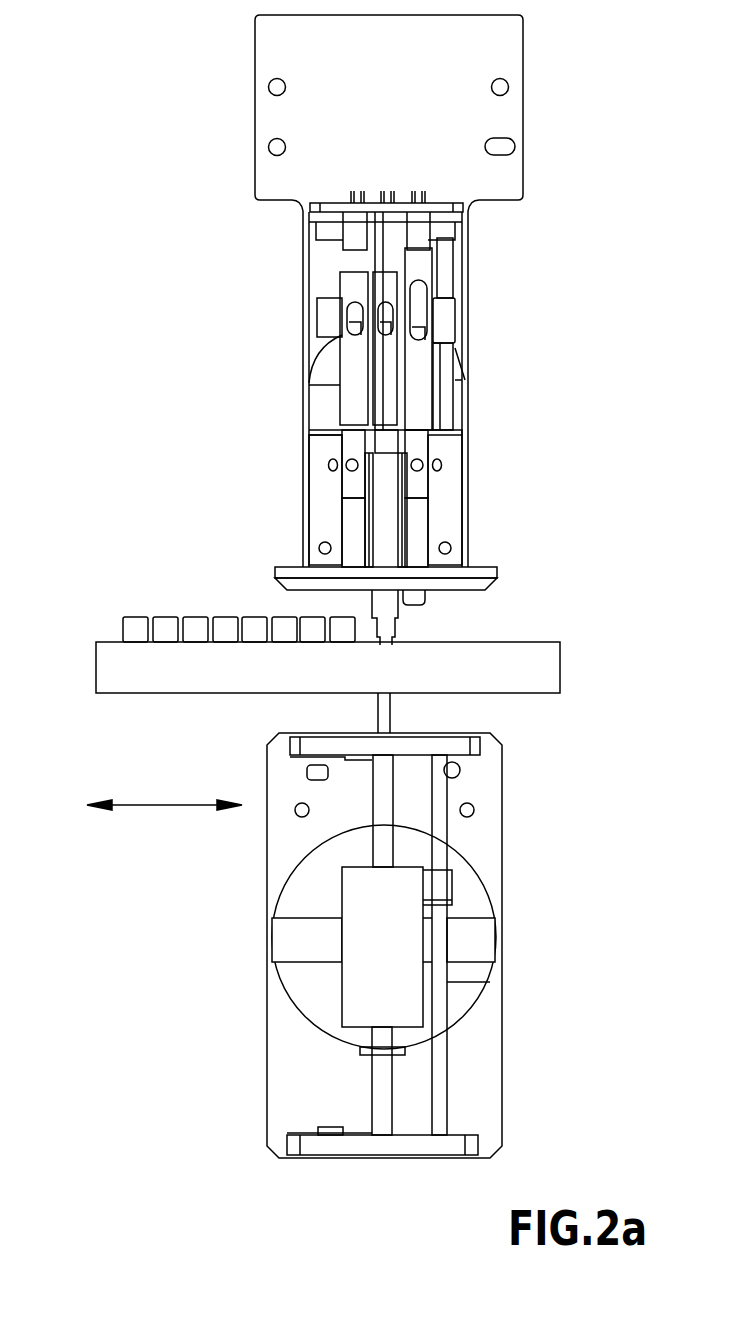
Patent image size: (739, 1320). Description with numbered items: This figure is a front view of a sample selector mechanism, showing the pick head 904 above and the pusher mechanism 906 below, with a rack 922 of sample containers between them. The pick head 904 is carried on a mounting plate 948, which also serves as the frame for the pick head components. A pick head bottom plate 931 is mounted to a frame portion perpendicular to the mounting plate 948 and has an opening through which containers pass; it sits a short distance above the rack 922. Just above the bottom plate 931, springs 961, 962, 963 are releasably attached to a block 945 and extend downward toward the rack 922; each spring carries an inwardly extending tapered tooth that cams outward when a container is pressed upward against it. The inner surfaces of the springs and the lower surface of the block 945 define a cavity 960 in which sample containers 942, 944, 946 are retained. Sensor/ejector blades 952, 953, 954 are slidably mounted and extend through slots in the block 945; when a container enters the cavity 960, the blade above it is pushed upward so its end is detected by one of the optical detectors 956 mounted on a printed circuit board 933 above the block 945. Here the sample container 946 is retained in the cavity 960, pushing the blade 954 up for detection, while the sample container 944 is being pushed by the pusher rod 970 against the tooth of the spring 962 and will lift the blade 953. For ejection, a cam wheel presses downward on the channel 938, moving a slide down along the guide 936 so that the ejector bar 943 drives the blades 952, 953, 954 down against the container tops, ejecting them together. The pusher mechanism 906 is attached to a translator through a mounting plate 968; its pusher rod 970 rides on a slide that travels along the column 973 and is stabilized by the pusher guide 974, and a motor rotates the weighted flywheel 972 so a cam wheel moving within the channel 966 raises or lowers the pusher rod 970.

The pick head 904 is at (190, 43).
The pusher mechanism 906 is at (183, 1037).
The rack 922 is at (212, 690).
The pick head bottom plate 931 is at (448, 590).
The printed circuit board 933 is at (327, 203).
The guide 936 is at (450, 268).
The channel 938 is at (463, 402).
The sample container 942 is at (278, 632).
The ejector bar 943 is at (325, 318).
The sample container 944 is at (385, 608).
The block 945 is at (455, 448).
The sample container 946 is at (427, 598).
The mounting plate 948 is at (515, 45).
The sensor/ejector blade 952 is at (347, 375).
The sensor/ejector blade 953 is at (378, 410).
The sensor/ejector blade 954 is at (423, 363).
The optical detector 956 is at (415, 222).
The cavity 960 is at (405, 530).
The spring 961 is at (350, 493).
The spring 962 is at (380, 535).
The spring 963 is at (420, 492).
The channel 966 is at (290, 948).
The mounting plate 968 is at (488, 783).
The pusher rod 970 is at (378, 715).
The flywheel 972 is at (307, 895).
The column 973 is at (385, 1127).
The pusher guide 974 is at (442, 838).